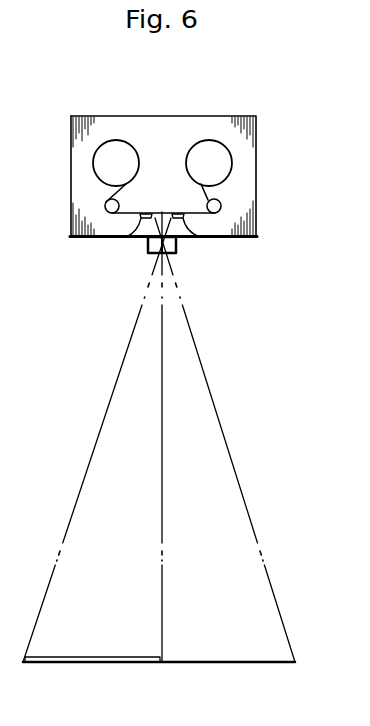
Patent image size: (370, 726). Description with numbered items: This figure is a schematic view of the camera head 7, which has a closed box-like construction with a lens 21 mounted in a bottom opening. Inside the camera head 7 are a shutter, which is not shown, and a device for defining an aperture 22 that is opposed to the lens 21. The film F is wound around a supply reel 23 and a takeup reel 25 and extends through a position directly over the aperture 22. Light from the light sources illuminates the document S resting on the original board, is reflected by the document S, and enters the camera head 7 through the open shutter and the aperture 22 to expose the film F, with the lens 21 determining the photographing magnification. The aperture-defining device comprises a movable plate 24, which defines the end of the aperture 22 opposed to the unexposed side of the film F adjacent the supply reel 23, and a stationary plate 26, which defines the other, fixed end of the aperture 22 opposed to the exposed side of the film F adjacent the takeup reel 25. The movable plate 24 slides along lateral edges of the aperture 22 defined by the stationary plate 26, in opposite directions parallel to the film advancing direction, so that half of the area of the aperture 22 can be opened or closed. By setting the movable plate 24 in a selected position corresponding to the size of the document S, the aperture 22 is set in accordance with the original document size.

The camera head 7 is at (255, 116).
The lens 21 is at (177, 243).
The aperture 22 is at (167, 211).
The supply reel 23 is at (112, 149).
The movable plate 24 is at (143, 219).
The takeup reel 25 is at (212, 149).
The stationary plate 26 is at (217, 236).
The film F is at (123, 214).
The document S is at (87, 656).